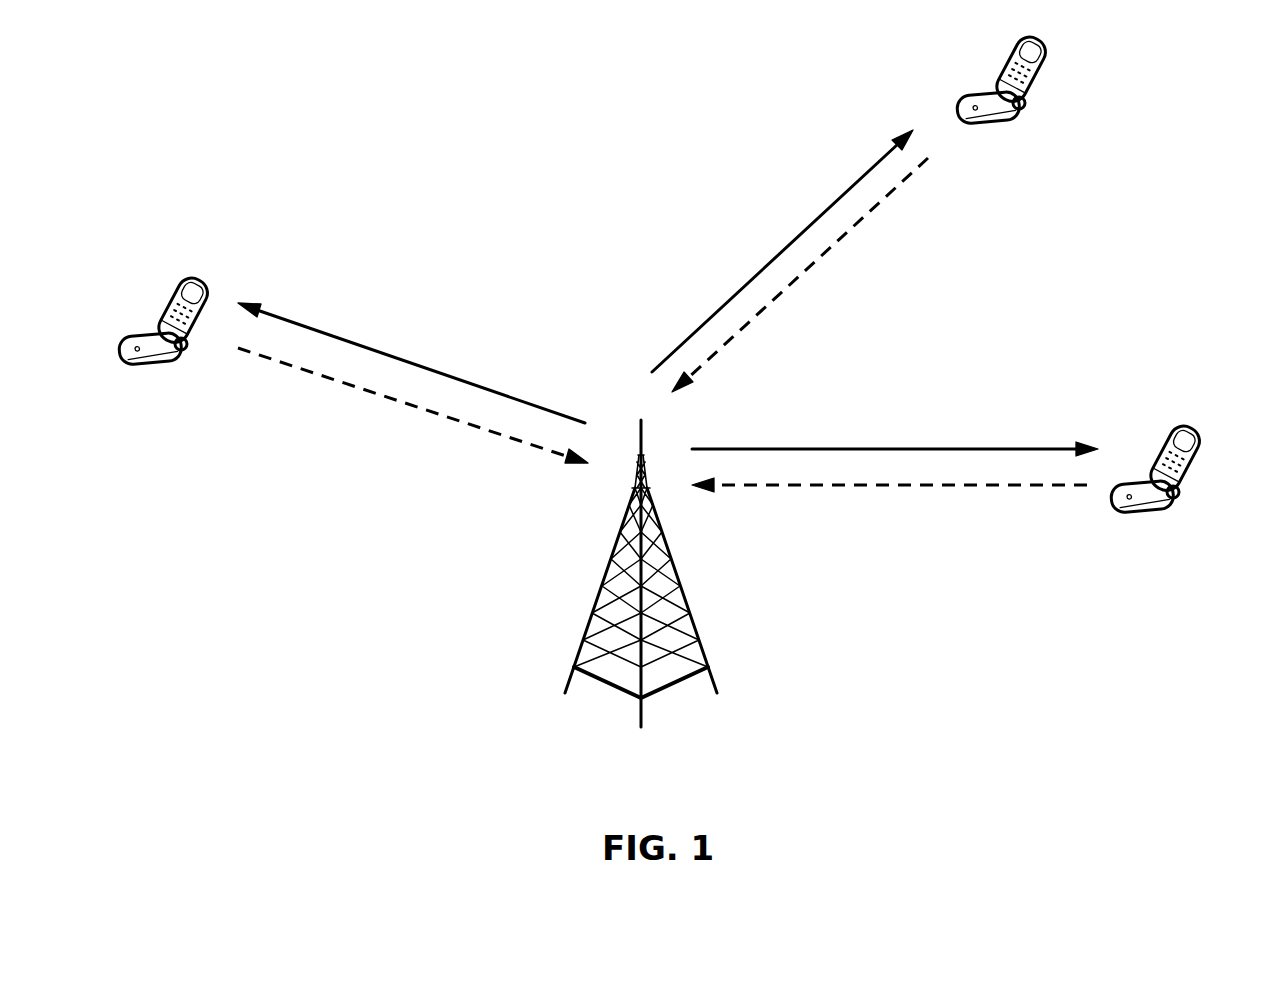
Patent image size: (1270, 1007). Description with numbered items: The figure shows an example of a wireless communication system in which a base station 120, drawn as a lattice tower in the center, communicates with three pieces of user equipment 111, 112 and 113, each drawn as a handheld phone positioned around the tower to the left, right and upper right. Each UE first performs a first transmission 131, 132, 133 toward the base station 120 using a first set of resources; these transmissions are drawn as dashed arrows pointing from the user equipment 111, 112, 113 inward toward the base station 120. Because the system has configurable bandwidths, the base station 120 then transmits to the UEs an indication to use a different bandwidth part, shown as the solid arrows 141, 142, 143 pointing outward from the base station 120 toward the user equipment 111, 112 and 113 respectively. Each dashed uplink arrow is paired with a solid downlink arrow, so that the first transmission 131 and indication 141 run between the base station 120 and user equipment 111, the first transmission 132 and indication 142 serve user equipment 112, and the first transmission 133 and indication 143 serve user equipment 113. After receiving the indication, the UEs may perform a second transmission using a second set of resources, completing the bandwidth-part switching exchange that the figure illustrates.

The user equipment 111 is at (173, 365).
The user equipment 112 is at (1165, 508).
The user equipment 113 is at (1017, 120).
The base station 120 is at (698, 648).
The first transmission 131 is at (452, 420).
The first transmission 132 is at (855, 487).
The first transmission 133 is at (827, 250).
The indication to use a different BWP 141 is at (345, 342).
The indication to use a different BWP 142 is at (1005, 445).
The indication to use a different BWP 143 is at (833, 202).